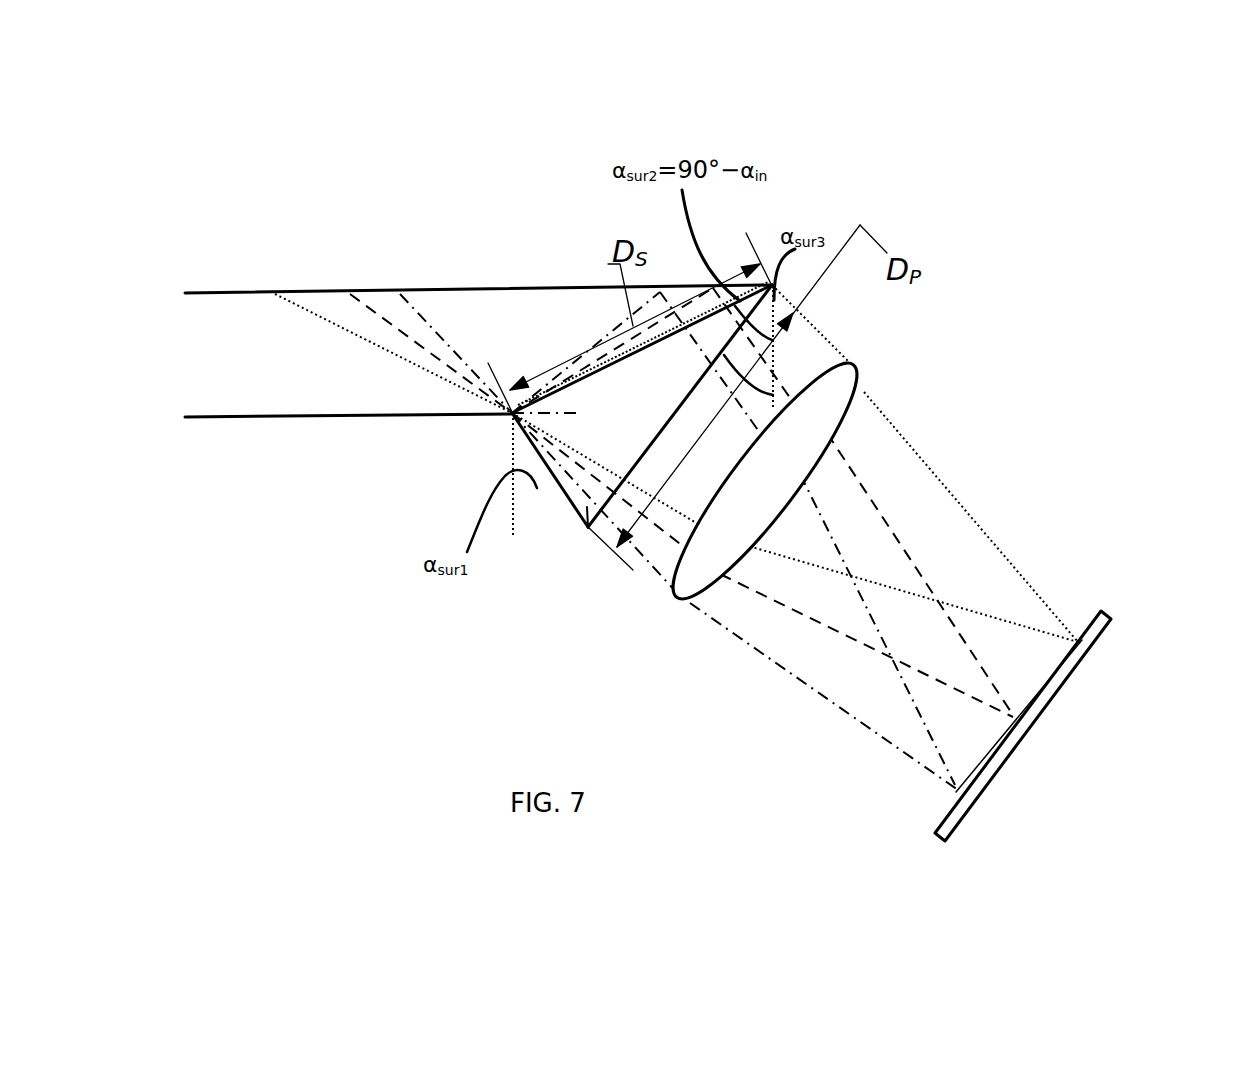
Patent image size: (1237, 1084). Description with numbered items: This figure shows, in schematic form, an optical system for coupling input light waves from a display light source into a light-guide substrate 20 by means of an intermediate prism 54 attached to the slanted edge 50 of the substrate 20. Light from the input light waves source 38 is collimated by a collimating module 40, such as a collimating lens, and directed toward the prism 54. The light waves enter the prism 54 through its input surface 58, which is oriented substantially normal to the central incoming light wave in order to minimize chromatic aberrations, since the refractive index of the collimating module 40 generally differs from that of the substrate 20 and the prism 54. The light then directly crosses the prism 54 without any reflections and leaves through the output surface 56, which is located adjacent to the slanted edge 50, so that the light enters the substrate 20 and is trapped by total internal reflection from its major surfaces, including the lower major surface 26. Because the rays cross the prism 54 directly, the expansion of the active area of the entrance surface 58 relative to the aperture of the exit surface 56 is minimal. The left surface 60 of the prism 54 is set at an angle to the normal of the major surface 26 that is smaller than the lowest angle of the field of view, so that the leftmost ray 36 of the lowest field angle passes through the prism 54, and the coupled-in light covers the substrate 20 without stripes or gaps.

The substrate 20 is at (263, 348).
The major surface 26 is at (342, 417).
The leftmost ray 36 is at (588, 528).
The input light waves source 38 is at (1080, 660).
The collimating module 40 is at (854, 366).
The slanted edge 50 is at (668, 397).
The intermediate prism 54 is at (668, 385).
The output surface 56 is at (772, 285).
The input surface 58 is at (600, 320).
The left surface 60 is at (552, 490).